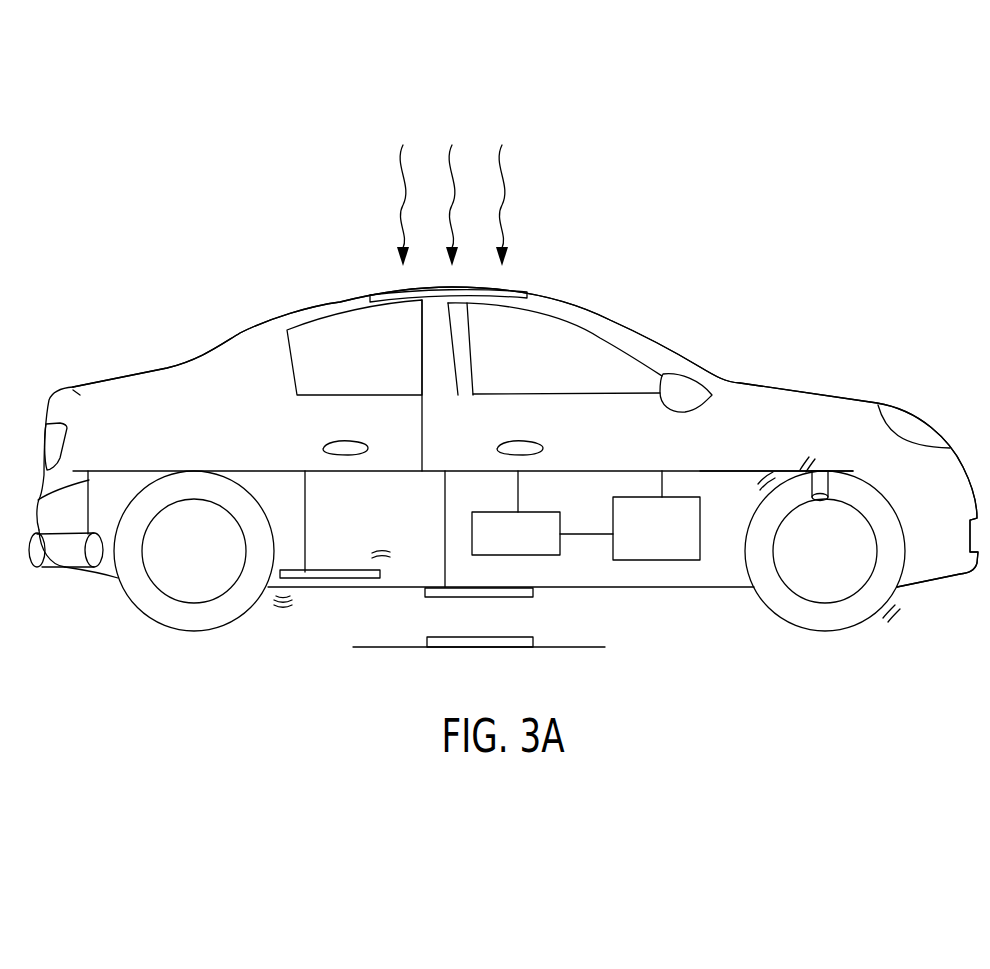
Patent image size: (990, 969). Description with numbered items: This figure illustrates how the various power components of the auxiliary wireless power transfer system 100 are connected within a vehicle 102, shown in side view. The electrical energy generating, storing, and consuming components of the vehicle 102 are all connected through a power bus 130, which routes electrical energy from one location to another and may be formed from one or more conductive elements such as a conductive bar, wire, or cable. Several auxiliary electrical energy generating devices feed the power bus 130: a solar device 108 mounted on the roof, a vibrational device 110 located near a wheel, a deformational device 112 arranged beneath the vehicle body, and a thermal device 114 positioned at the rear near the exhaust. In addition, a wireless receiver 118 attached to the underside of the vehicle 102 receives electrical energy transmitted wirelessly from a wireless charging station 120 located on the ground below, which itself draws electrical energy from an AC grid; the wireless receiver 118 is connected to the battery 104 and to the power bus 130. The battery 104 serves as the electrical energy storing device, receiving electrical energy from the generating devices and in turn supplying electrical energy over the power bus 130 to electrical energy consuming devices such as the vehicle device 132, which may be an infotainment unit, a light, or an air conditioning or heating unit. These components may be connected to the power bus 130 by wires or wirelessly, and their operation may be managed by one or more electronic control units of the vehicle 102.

The auxiliary wireless power transfer system 100 is at (152, 160).
The vehicle 102 is at (240, 333).
The battery 104 is at (550, 512).
The solar device 108 is at (508, 292).
The vibrational device 110 is at (815, 500).
The deformational device 112 is at (322, 580).
The thermal device 114 is at (53, 572).
The wireless receiver 118 is at (425, 594).
The wireless charging station 120 is at (437, 644).
The power bus 130 is at (738, 468).
The vehicle device 132 is at (695, 497).